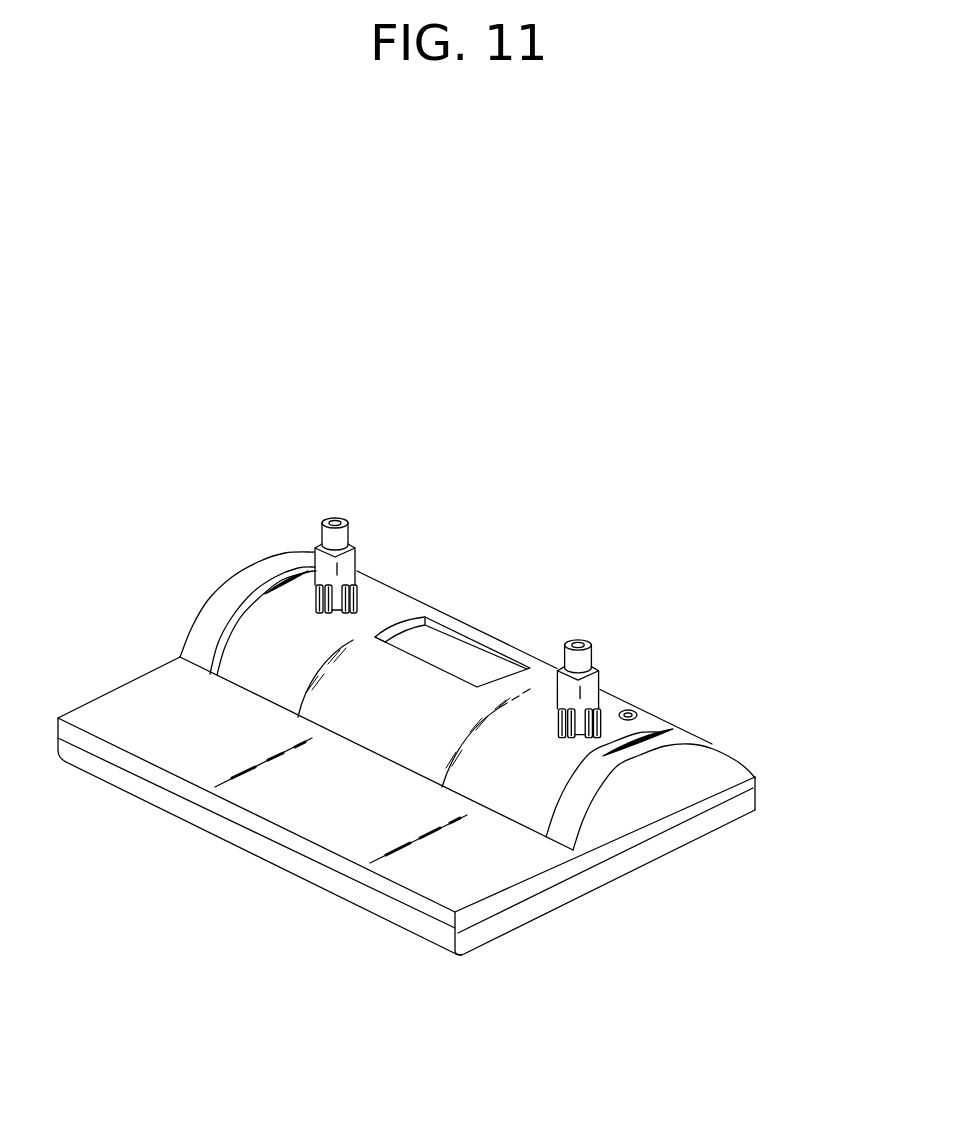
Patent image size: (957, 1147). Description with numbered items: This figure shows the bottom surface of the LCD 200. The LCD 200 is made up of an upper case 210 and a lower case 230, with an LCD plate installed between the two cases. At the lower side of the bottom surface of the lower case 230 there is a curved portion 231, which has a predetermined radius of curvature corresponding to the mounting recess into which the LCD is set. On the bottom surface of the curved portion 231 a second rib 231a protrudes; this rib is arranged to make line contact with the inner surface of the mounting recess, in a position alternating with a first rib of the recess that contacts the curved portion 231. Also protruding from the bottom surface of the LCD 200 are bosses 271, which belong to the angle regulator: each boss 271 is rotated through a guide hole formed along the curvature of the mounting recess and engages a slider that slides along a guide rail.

The LCD 200 is at (548, 523).
The upper case 210 is at (713, 820).
The lower case 230 is at (758, 781).
The curved portion 231 is at (687, 738).
The second rib 231a is at (662, 728).
The boss 271 is at (582, 660).